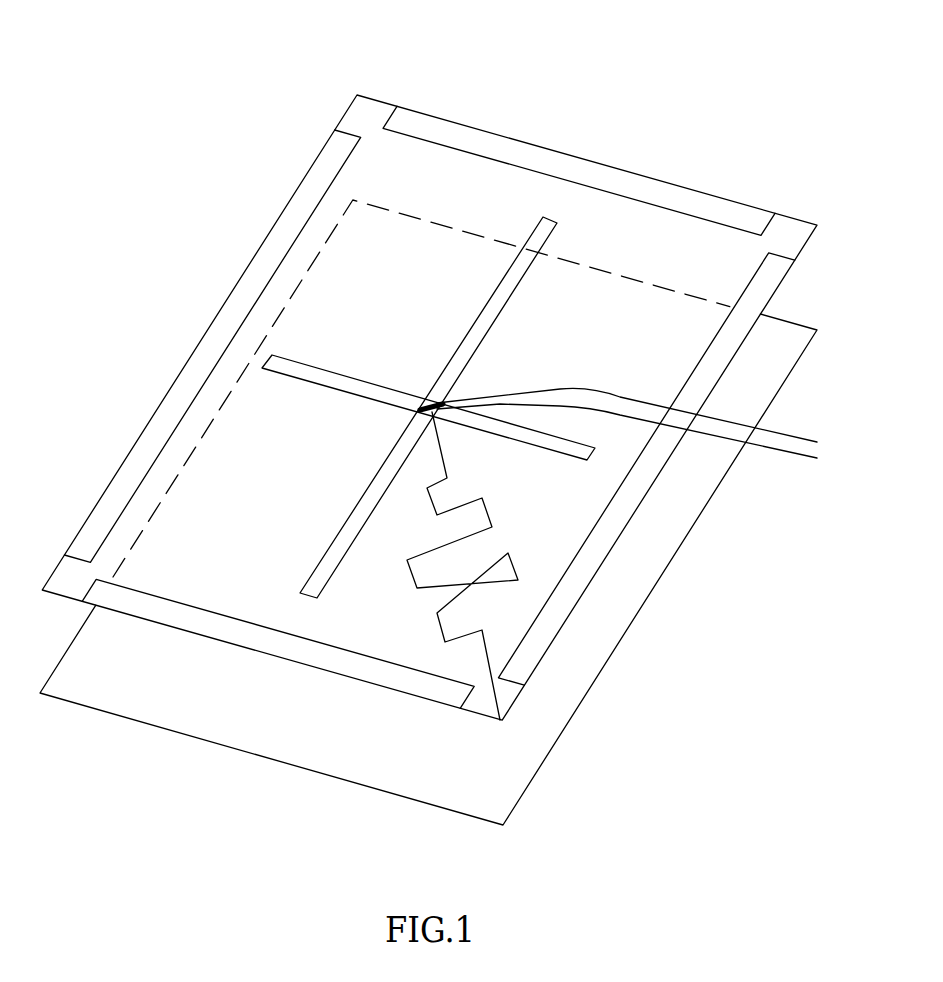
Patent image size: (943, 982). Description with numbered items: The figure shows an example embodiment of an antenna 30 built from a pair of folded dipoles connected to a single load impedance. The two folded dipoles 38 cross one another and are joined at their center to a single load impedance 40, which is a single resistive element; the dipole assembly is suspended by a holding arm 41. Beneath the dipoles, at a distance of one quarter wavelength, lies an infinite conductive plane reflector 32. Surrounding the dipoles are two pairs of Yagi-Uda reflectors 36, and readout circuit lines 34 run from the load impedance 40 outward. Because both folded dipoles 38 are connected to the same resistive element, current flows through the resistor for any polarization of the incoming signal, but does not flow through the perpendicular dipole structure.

The antenna 30 is at (235, 93).
The infinite conductive plane reflector 32 is at (710, 495).
The readout circuit lines 34 is at (787, 455).
The Yagi-Uda reflectors 36 is at (277, 237).
The folded dipoles 38 is at (523, 277).
The load impedance 40 is at (430, 400).
The holding arm 41 is at (490, 510).